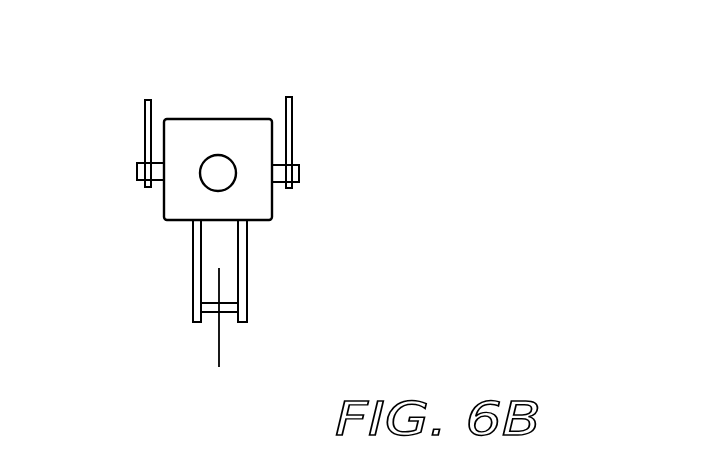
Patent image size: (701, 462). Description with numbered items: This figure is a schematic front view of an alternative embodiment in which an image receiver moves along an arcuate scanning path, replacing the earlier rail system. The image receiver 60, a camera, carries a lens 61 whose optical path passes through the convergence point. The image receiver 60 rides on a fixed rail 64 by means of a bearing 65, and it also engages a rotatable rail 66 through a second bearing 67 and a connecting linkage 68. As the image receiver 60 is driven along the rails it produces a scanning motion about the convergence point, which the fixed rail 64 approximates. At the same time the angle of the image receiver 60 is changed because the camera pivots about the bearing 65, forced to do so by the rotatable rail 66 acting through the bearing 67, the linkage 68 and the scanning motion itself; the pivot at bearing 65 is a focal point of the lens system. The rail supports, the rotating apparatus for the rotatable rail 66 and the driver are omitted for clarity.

The image receiver 60 is at (250, 104).
The lens 61 is at (227, 163).
The fixed rail 64 is at (145, 124).
The bearing 65 is at (138, 178).
The rotatable rail 66 is at (220, 352).
The bearing 67 is at (232, 308).
The connecting linkage 68 is at (200, 270).